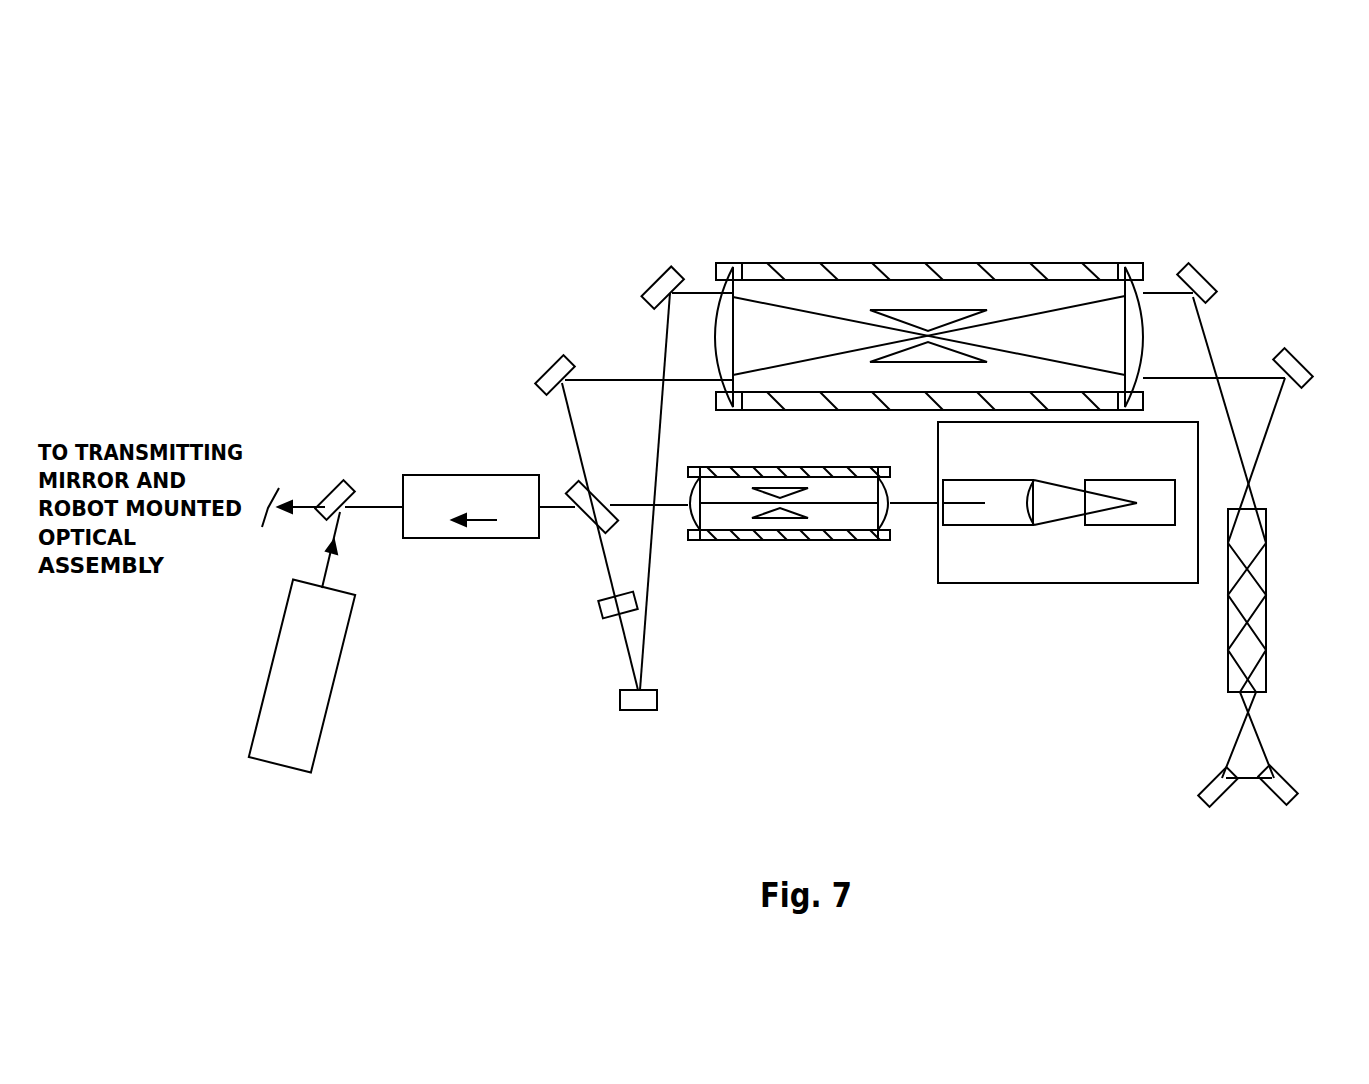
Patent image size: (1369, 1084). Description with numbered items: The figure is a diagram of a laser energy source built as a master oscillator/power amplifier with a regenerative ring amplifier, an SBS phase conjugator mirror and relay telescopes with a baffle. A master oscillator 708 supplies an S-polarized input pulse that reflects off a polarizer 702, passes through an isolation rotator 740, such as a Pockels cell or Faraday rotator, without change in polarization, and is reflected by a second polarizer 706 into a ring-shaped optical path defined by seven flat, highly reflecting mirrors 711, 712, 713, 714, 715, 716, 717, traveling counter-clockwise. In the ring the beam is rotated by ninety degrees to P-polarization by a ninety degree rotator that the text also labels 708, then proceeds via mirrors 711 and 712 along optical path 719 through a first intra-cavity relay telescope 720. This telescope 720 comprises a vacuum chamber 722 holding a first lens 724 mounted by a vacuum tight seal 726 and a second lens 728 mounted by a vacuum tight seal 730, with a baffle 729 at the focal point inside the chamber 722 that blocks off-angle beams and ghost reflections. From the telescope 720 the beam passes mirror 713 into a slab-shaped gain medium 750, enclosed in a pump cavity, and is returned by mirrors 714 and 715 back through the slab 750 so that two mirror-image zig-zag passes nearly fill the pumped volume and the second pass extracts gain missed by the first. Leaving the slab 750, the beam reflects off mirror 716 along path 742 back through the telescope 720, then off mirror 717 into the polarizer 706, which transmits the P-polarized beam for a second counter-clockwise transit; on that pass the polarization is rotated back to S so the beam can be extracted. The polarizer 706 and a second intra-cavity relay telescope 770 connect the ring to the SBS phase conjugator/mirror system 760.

The polarizer 702 is at (323, 490).
The polarizer 706 is at (586, 522).
The master oscillator 708 is at (340, 657).
The flat highly reflecting mirror 711 is at (620, 704).
The flat highly reflecting mirror 712 is at (652, 276).
The flat highly reflecting mirror 713 is at (1304, 360).
The flat highly reflecting mirror 714 is at (1292, 796).
The flat highly reflecting mirror 715 is at (1208, 796).
The flat highly reflecting mirror 716 is at (1208, 276).
The flat highly reflecting mirror 717 is at (546, 364).
The optical path 719 is at (820, 310).
The first intra-cavity relay telescope 720 is at (895, 270).
The vacuum chamber 722 is at (890, 262).
The first lens 724 is at (716, 330).
The vacuum tight seal 726 is at (730, 266).
The second lens 728 is at (1125, 333).
The baffle 729 is at (956, 300).
The vacuum tight seal 730 is at (1135, 266).
The rotator 740 is at (471, 475).
The path 742 is at (1020, 318).
The slab-shaped gain medium 750 is at (1268, 570).
The SBS phase conjugator/mirror system 760 is at (990, 583).
The second intra-cavity relay telescope 770 is at (812, 542).